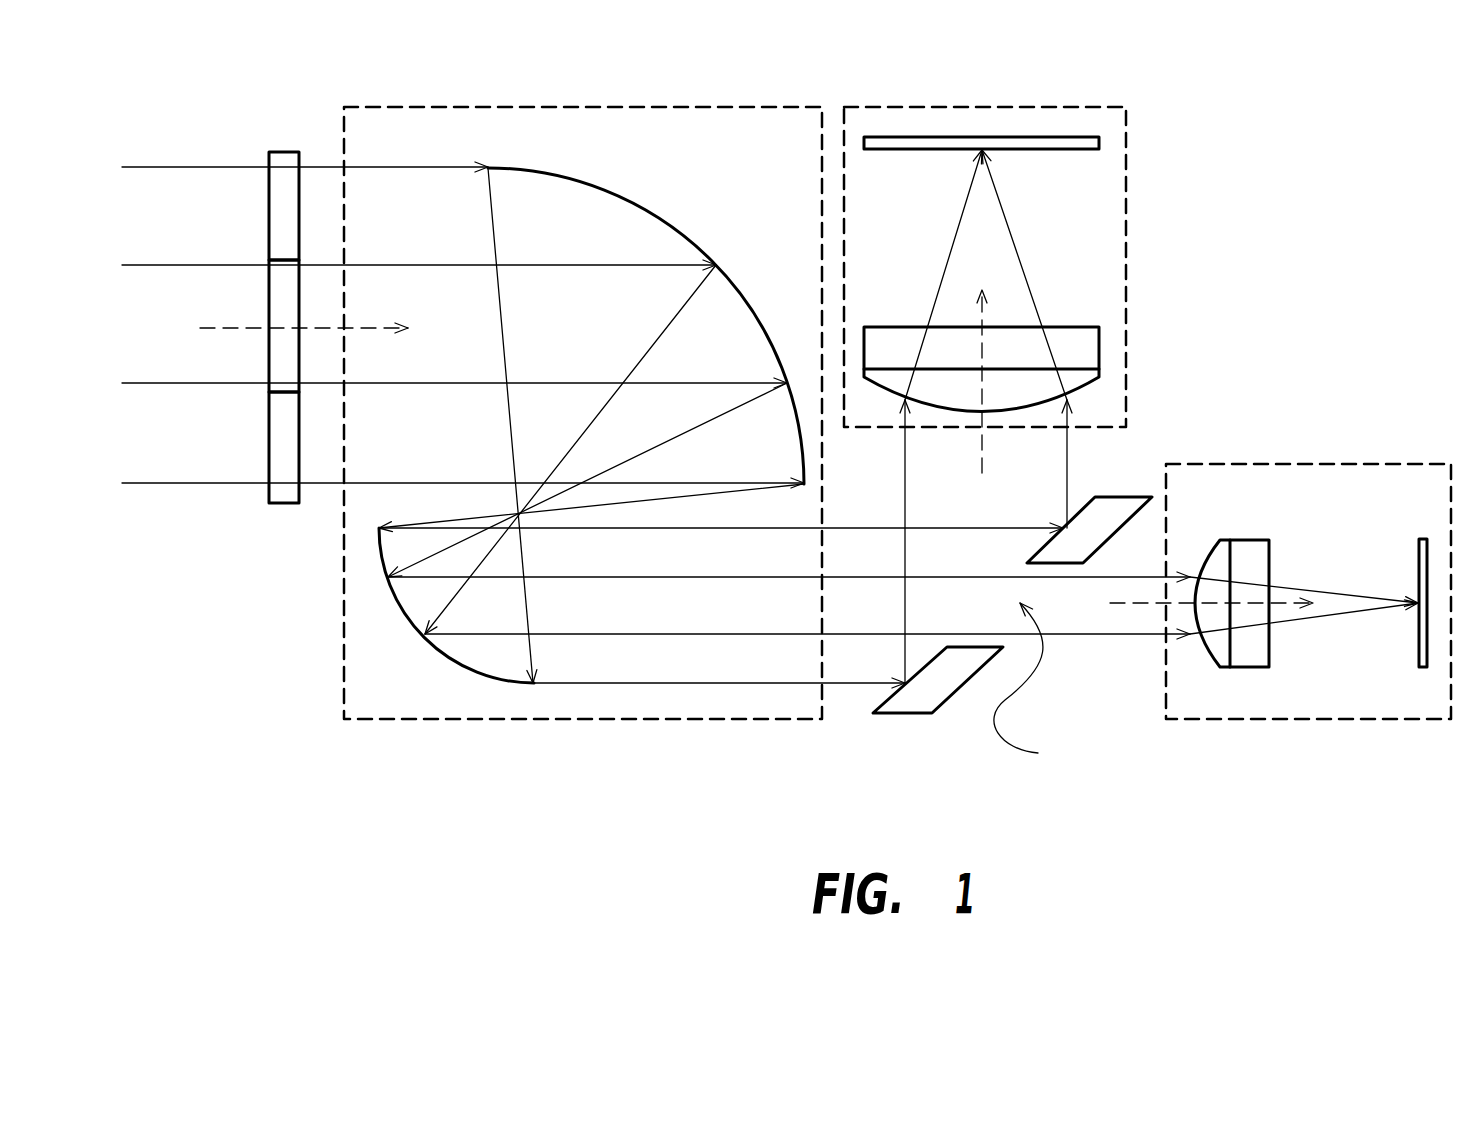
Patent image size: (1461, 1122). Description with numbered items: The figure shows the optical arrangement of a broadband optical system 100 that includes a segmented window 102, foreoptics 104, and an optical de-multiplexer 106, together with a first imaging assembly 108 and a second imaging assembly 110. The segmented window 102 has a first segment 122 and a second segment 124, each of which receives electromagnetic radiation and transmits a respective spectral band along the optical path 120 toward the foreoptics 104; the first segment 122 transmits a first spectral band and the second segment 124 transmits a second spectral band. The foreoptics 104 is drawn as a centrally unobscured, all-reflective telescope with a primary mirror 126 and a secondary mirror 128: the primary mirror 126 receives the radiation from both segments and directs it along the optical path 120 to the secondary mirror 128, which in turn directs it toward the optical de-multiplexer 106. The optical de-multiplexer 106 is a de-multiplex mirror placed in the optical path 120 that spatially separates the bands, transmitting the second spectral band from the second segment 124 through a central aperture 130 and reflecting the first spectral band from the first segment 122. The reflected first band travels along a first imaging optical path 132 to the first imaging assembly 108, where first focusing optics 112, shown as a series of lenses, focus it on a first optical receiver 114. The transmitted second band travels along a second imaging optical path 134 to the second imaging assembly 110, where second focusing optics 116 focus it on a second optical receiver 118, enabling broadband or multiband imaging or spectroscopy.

The broadband optical system 100 is at (1303, 98).
The segmented window 102 is at (268, 150).
The foreoptics 104 is at (682, 107).
The optical de-multiplexer 106 is at (1103, 493).
The first imaging assembly 108 is at (1062, 107).
The second imaging assembly 110 is at (1327, 462).
The first focusing optics 112 is at (1100, 355).
The first optical receiver 114 is at (1100, 143).
The second focusing optics 116 is at (1253, 667).
The second optical receiver 118 is at (1425, 667).
The optical path 120 is at (243, 328).
The first segment 122 is at (268, 198).
The second segment 124 is at (268, 303).
The primary mirror 126 is at (632, 200).
The secondary mirror 128 is at (390, 585).
The central aperture 130 is at (1038, 684).
The first imaging optical path 132 is at (982, 465).
The second imaging optical path 134 is at (1145, 605).